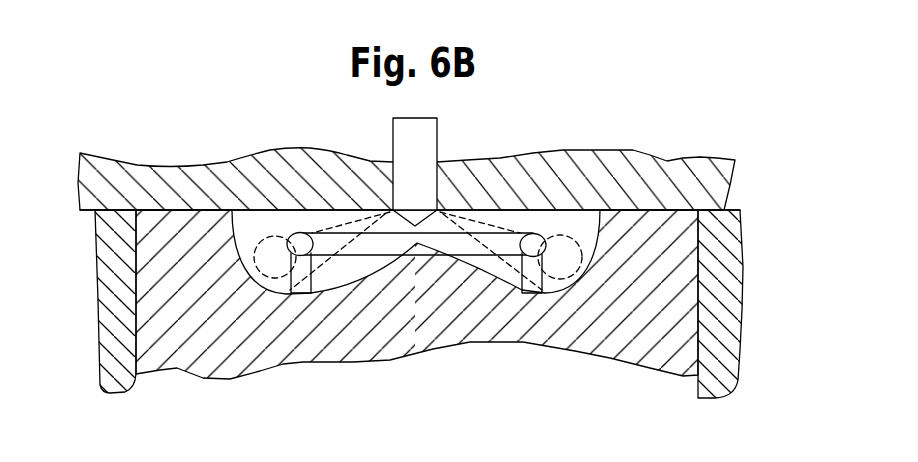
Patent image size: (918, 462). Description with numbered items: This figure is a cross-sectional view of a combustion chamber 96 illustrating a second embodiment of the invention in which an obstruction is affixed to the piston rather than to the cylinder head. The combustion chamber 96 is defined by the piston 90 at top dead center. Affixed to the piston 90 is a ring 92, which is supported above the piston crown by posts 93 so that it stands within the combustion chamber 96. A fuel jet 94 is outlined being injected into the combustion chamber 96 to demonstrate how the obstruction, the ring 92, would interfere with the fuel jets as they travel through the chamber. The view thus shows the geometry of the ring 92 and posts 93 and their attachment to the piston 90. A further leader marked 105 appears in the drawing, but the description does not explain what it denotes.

The body 90 is at (403, 310).
The seal retainer bar 92 is at (350, 257).
The side wall 93 is at (240, 265).
The O-ring seal (alternate position) 94 is at (260, 237).
The actuator pin 96 is at (377, 231).
The seal displacement path 105 is at (491, 213).